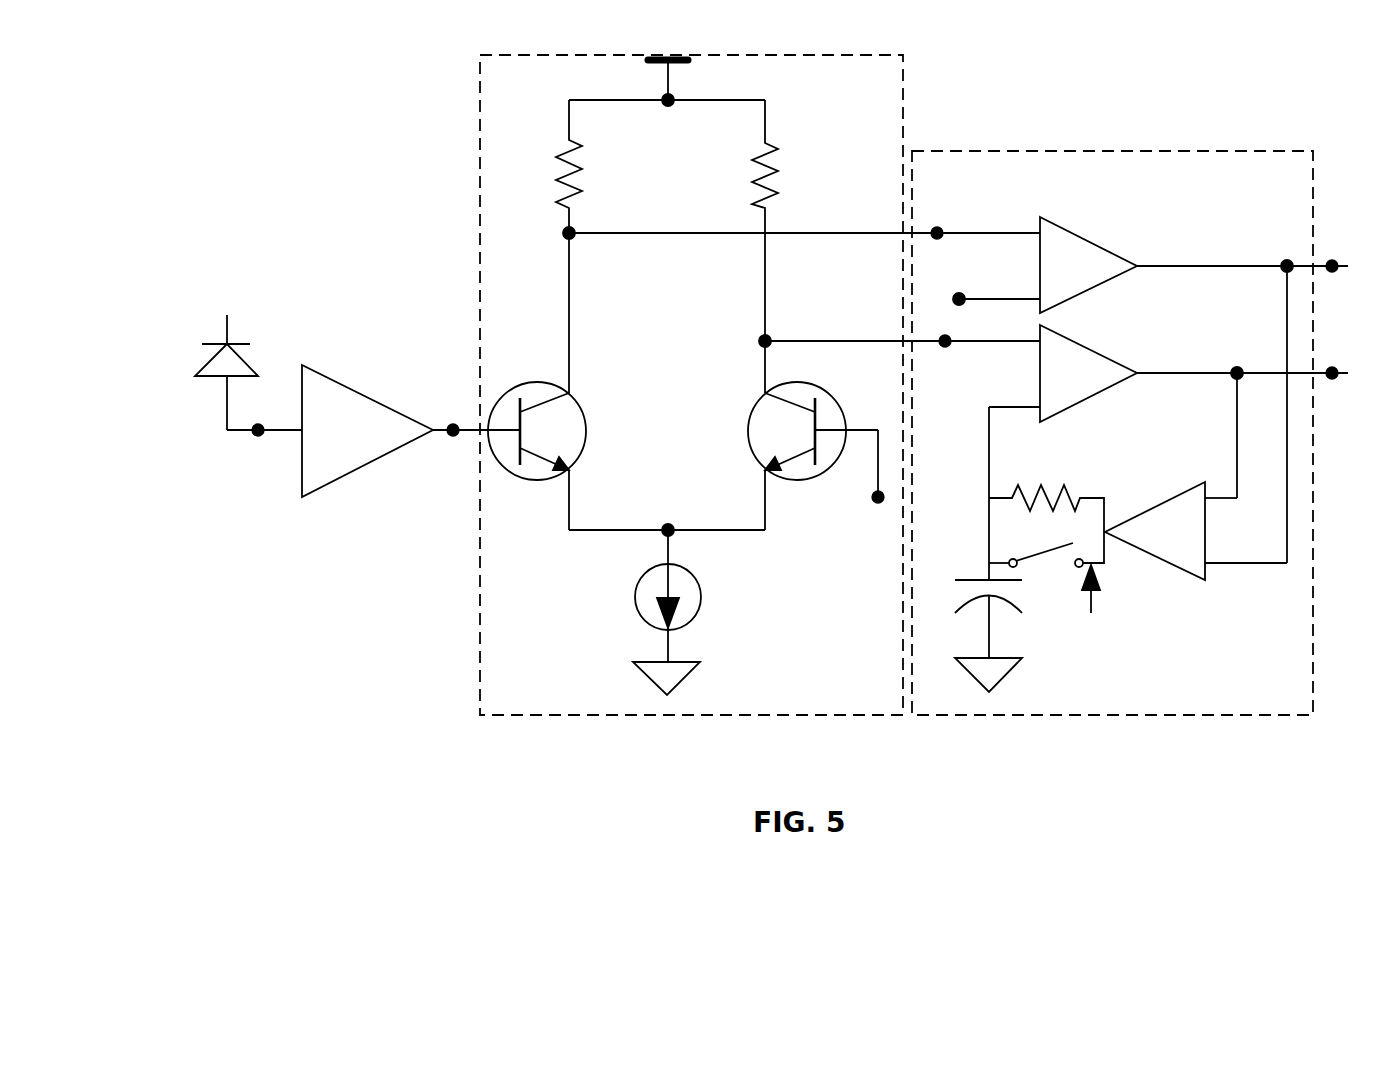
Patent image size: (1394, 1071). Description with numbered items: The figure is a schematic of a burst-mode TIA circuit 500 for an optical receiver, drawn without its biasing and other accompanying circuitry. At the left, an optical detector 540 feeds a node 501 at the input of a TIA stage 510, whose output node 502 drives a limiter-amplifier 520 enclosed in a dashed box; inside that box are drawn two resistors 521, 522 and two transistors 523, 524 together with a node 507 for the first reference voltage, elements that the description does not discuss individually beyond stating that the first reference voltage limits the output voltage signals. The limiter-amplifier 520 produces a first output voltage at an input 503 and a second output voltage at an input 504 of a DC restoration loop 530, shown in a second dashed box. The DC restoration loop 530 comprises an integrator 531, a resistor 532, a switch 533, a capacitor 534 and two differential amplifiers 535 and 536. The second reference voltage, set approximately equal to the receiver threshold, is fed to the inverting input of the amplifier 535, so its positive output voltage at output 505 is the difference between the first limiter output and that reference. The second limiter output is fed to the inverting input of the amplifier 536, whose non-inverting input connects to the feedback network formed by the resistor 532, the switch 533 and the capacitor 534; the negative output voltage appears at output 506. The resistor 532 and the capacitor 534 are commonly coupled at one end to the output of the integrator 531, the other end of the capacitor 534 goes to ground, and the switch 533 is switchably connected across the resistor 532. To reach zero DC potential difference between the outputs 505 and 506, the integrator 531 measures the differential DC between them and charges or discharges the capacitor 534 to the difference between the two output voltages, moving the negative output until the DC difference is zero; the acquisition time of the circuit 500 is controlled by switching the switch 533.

The burst-mode TIA circuit 500 is at (1183, 102).
The input node 501 is at (258, 418).
The TIA output node 502 is at (455, 418).
The input 503 is at (937, 223).
The inverting input 504 is at (944, 330).
The output 505 is at (1347, 256).
The output 506 is at (1347, 363).
The reference voltage node 507 is at (858, 498).
The TIA stage 510 is at (339, 384).
The limiter-amplifier 520 is at (480, 93).
The first load resistor 521 is at (582, 165).
The second load resistor 522 is at (757, 150).
The first transistor 523 is at (585, 418).
The second transistor 524 is at (750, 428).
The DC restoration loop 530 is at (1077, 150).
The integrator 531 is at (1173, 500).
The resistor 532 is at (1043, 482).
The switch 533 is at (1053, 548).
The capacitor 534 is at (970, 578).
The differential amplifier 535 is at (1077, 232).
The differential amplifier 536 is at (1093, 346).
The optical detector 540 is at (218, 366).